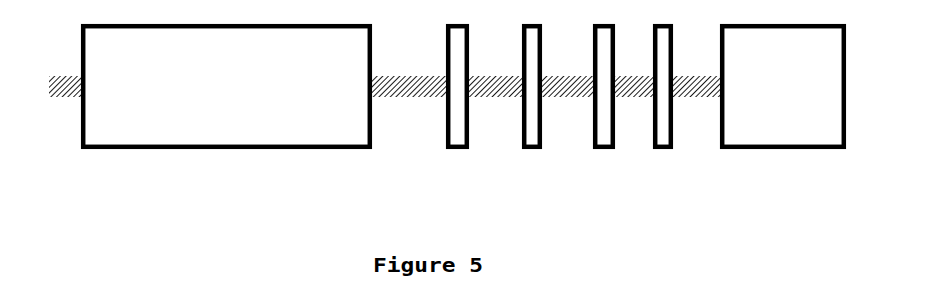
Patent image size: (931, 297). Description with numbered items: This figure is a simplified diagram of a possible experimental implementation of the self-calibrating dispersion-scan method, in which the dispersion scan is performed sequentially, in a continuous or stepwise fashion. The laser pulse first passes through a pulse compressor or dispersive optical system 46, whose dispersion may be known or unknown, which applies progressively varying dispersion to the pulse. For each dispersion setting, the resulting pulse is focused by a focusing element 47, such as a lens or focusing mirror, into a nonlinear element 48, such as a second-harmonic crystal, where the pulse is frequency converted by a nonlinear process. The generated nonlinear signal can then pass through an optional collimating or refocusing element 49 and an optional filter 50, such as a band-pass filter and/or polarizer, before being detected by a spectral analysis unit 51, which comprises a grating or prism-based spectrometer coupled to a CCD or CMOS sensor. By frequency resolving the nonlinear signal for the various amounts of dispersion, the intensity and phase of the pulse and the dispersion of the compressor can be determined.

The pulse compressor or dispersive optical system 46 is at (226, 112).
The focusing element 47 is at (457, 112).
The nonlinear element 48 is at (531, 112).
The optional collimating or refocusing element 49 is at (602, 112).
The filter 50 is at (661, 112).
The spectral analysis unit 51 is at (783, 112).